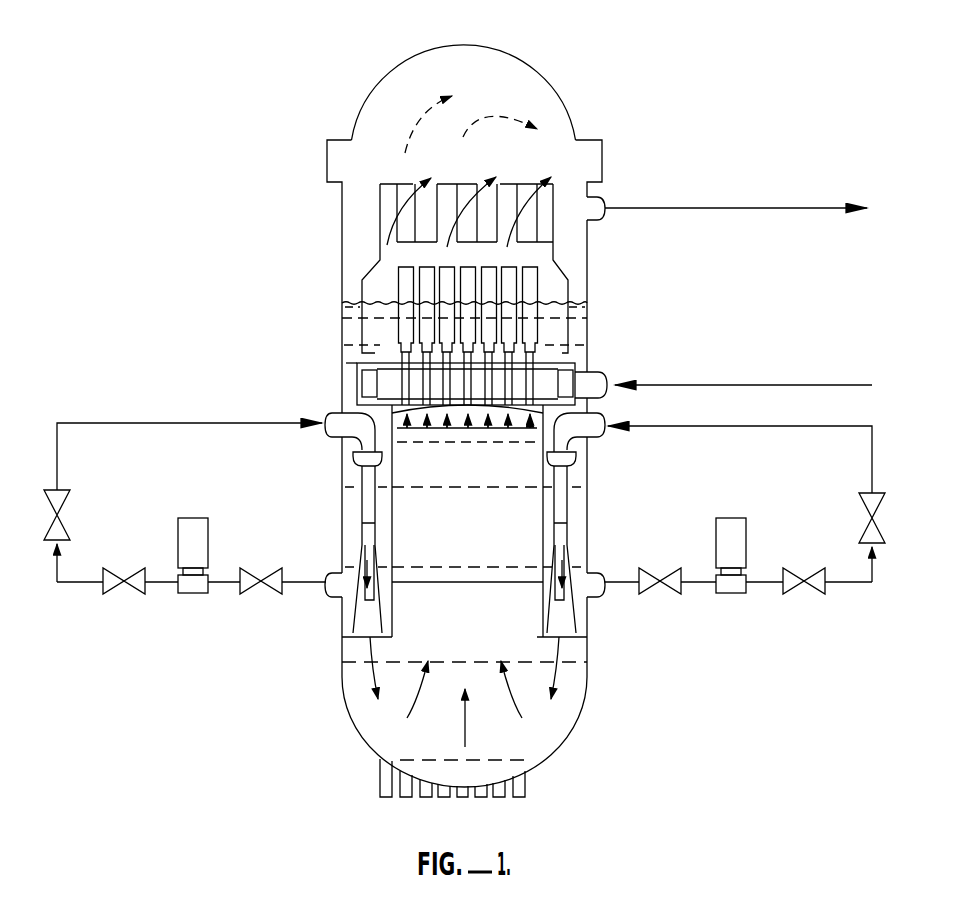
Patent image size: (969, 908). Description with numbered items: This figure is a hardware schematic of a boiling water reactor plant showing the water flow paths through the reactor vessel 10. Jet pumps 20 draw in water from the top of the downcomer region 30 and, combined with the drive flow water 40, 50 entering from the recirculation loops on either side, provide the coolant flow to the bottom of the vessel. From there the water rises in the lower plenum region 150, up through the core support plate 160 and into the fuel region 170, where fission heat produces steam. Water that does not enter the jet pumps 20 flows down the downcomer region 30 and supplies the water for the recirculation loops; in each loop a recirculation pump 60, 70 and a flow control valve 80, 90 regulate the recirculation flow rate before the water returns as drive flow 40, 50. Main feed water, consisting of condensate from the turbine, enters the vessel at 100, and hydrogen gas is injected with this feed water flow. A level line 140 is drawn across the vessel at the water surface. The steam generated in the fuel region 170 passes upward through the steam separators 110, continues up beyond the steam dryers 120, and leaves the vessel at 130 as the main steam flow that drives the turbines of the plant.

The reactor vessel 10 is at (552, 84).
The jet pumps 20 is at (363, 505).
The downcomer region 30 is at (347, 530).
The drive flow water 40 is at (107, 423).
The drive flow water 50 is at (829, 426).
The recirculation pump 60 is at (197, 588).
The recirculation pump 70 is at (734, 593).
The flow control valve 80 is at (120, 587).
The flow control valve 90 is at (812, 593).
The main feed water inlet 100 is at (839, 385).
The steam separators 110 is at (550, 288).
The steam dryers 120 is at (378, 223).
The main steam outlet 130 is at (829, 208).
The water level 140 is at (380, 303).
The lower plenum region 150 is at (488, 652).
The core support plate 160 is at (448, 583).
The fuel region 170 is at (472, 524).